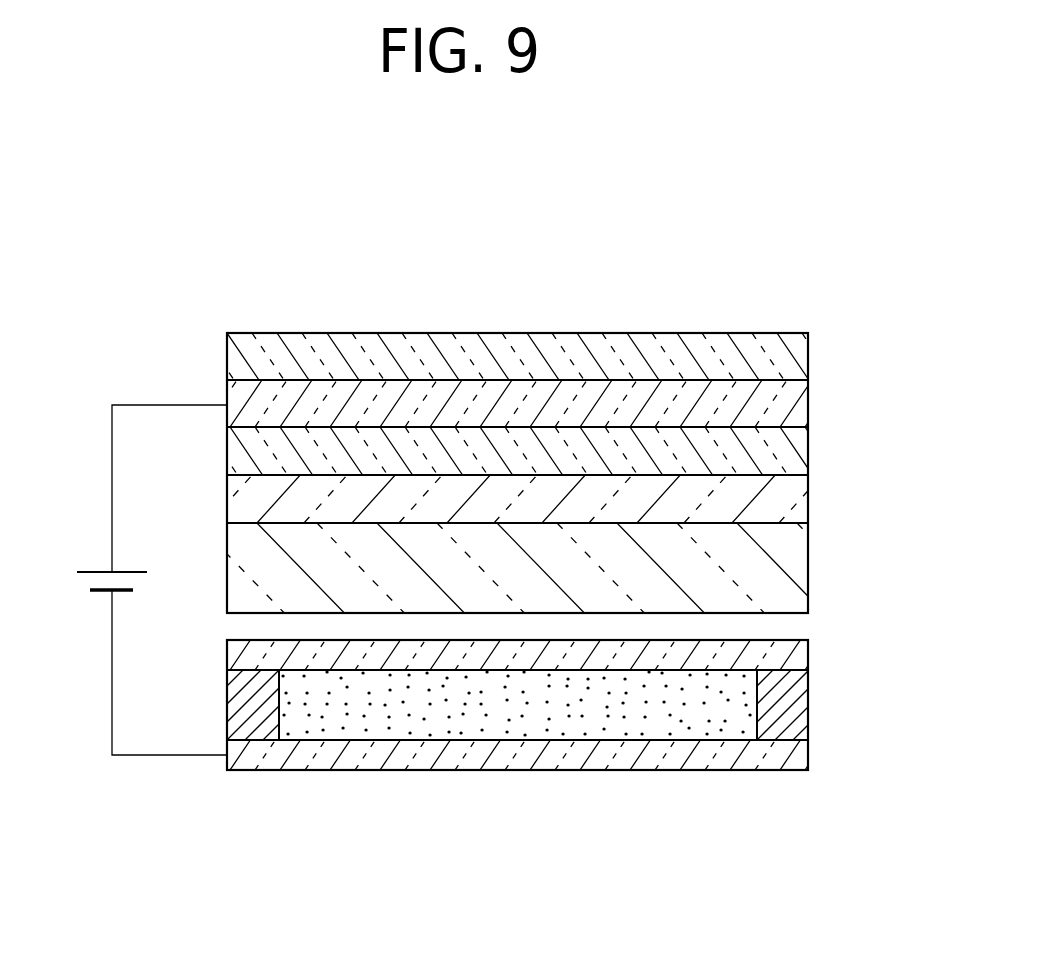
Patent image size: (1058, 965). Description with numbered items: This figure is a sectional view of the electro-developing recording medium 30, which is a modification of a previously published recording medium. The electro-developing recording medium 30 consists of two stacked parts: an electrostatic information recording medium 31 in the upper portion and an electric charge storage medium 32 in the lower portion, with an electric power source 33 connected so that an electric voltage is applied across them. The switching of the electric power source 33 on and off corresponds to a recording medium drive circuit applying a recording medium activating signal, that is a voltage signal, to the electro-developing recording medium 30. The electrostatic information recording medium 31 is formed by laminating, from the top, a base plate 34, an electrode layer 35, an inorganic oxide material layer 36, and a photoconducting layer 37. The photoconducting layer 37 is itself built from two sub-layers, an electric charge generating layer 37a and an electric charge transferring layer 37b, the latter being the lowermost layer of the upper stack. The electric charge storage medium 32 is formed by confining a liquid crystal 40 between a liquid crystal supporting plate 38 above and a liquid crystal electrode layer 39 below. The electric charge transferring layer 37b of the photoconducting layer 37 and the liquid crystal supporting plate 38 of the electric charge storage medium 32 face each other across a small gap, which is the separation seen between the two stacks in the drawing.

The electro-developing recording medium 30 is at (107, 800).
The electrostatic information recording medium 31 is at (283, 311).
The electric charge storage medium 32 is at (277, 800).
The electric power source 33 is at (103, 595).
The base plate 34 is at (710, 350).
The electrode layer 35 is at (453, 400).
The inorganic oxide material layer 36 is at (807, 434).
The photoconducting layer 37 is at (567, 547).
The electric charge generating layer 37a is at (802, 484).
The electric charge transferring layer 37b is at (565, 597).
The liquid crystal supporting plate 38 is at (423, 660).
The liquid crystal electrode layer 39 is at (722, 755).
The liquid crystal 40 is at (583, 700).